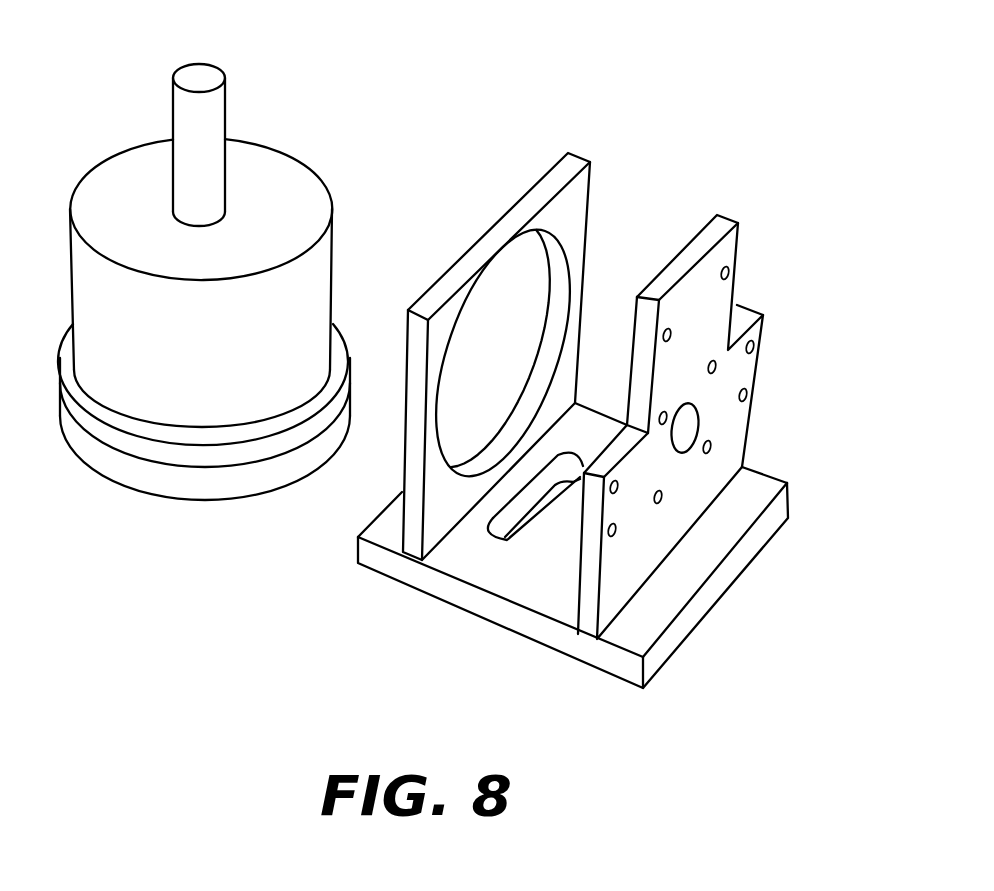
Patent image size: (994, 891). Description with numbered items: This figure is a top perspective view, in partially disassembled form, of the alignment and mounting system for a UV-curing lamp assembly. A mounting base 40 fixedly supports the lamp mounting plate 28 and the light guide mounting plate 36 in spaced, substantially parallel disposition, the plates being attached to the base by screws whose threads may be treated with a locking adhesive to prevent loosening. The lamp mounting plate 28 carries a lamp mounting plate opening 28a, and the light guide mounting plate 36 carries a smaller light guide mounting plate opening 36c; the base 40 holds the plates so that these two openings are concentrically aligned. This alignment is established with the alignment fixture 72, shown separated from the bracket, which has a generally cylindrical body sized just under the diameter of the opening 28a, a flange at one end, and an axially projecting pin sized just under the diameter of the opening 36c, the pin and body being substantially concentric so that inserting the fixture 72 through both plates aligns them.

The alignment fixture 72 is at (113, 180).
The lamp mounting plate 28 is at (410, 455).
The lamp mounting plate opening 28a is at (474, 304).
The light guide mounting plate 36 is at (743, 370).
The light guide mounting plate opening 36c is at (687, 423).
The mounting base 40 is at (523, 587).